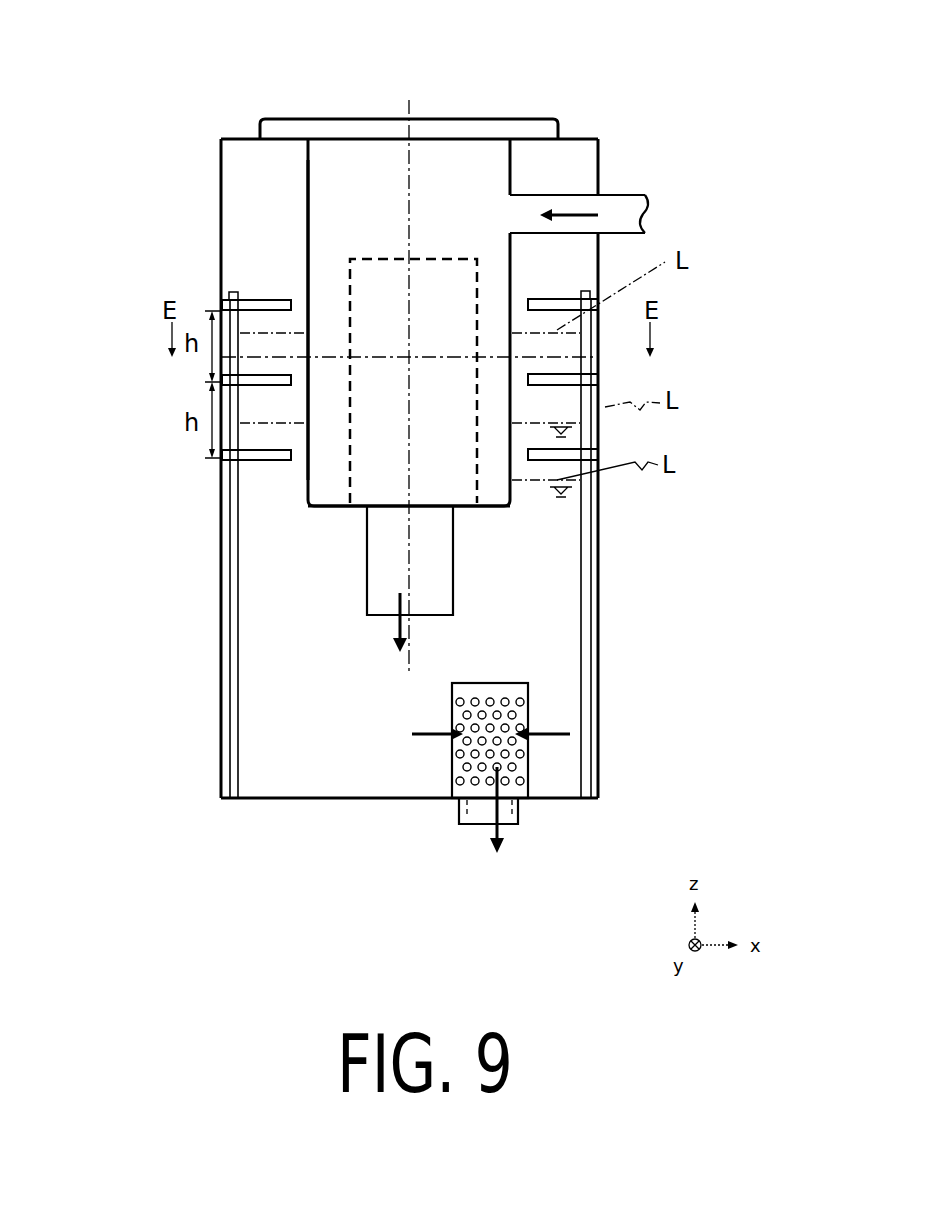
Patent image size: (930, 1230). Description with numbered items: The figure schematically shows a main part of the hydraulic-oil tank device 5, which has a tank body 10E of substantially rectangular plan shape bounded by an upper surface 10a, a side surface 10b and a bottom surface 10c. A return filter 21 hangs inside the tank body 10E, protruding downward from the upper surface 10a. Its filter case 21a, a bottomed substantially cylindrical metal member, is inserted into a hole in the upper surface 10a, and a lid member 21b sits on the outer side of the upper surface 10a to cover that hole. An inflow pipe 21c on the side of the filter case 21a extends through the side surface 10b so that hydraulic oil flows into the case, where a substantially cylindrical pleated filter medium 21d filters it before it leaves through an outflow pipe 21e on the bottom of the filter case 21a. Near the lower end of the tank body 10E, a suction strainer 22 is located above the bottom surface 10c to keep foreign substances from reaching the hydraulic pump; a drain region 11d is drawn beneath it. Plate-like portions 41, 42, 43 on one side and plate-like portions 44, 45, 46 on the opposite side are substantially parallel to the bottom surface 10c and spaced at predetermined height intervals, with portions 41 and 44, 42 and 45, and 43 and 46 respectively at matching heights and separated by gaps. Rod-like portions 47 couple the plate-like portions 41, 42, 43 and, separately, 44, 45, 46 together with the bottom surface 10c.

The hydraulic-oil tank device 5 is at (657, 27).
The upper surface 10a is at (588, 139).
The side surface 10b is at (598, 160).
The bottom surface 10c is at (556, 800).
The tank body 10E is at (600, 540).
The drain outlet 11d is at (512, 808).
The return filter 21 is at (305, 190).
The filter case 21a is at (308, 275).
The lid member 21b is at (283, 132).
The inflow pipe 21c is at (622, 195).
The filter medium 21d is at (350, 487).
The outflow pipe 21e is at (365, 602).
The suction strainer 22 is at (533, 696).
The plate-like portion 41 is at (232, 293).
The plate-like portion 42 is at (265, 382).
The plate-like portion 43 is at (270, 457).
The plate-like portion 44 is at (557, 302).
The plate-like portion 45 is at (575, 381).
The plate-like portion 46 is at (575, 455).
The rod-like portions 47 is at (233, 625).